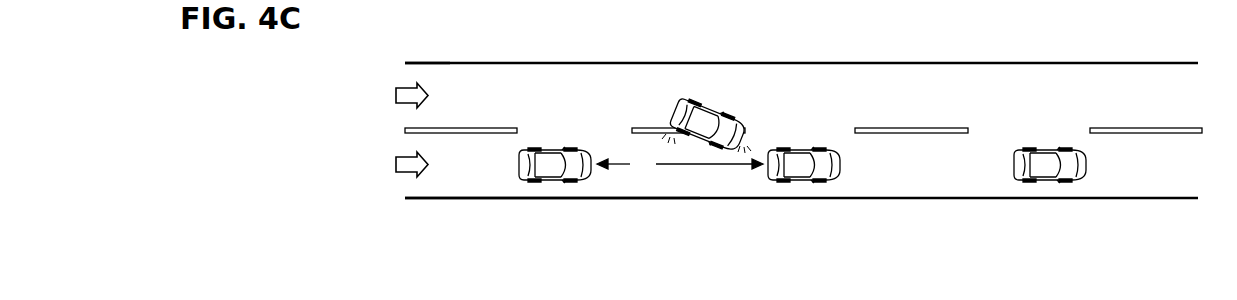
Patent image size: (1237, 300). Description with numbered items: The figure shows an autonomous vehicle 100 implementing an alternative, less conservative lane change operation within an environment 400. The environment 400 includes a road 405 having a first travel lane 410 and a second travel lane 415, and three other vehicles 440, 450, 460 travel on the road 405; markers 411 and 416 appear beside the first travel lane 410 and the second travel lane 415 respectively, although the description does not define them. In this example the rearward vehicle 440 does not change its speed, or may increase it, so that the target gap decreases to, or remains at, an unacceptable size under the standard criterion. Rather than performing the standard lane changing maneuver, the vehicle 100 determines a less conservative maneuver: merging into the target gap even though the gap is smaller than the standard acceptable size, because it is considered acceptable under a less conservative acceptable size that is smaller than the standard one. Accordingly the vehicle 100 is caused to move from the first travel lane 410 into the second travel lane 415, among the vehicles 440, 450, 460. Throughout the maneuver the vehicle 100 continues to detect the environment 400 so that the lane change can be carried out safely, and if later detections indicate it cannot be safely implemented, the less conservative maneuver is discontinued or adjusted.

The vehicle 100 is at (707, 110).
The environment 400 is at (1187, 50).
The road 405 is at (393, 52).
The first travel lane 410 is at (500, 105).
The direction of travel of first lane 411 is at (396, 95).
The second travel lane 415 is at (500, 171).
The direction of travel of second lane 416 is at (396, 164).
The rearward vehicle 440 is at (529, 183).
The vehicle 450 is at (793, 183).
The vehicle 460 is at (1058, 183).